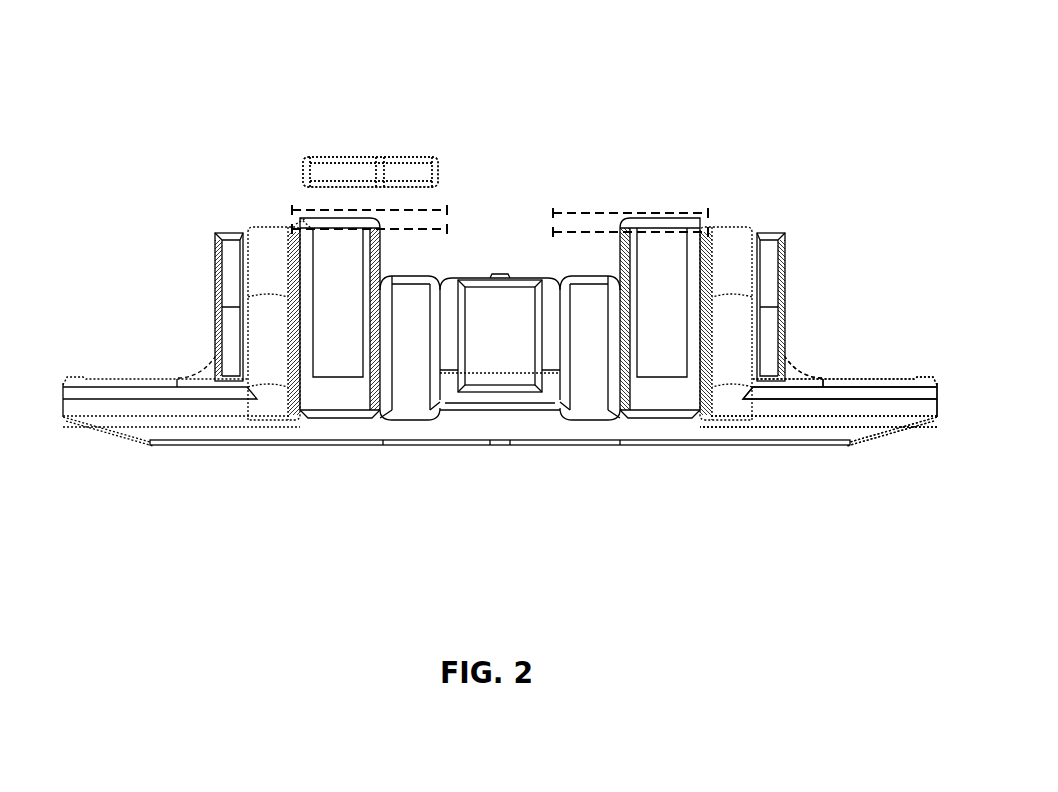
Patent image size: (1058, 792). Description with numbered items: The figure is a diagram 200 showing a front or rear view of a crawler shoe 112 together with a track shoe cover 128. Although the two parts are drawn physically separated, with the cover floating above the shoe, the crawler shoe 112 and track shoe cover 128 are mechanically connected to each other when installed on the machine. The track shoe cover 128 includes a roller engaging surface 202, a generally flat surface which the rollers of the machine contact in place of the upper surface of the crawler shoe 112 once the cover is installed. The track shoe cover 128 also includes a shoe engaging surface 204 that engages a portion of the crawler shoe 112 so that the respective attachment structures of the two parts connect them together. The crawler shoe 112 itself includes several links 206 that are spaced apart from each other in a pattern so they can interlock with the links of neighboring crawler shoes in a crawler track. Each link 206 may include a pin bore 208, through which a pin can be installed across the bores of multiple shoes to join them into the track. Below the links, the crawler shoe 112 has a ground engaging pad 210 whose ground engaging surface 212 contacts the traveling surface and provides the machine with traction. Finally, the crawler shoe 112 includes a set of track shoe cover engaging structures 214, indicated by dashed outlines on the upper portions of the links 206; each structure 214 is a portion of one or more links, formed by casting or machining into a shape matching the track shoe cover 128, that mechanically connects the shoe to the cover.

The diagram 200 is at (120, 46).
The track shoe cover 128 is at (252, 126).
The roller engaging surface 202 is at (334, 151).
The shoe engaging surface 204 is at (316, 196).
The crawler shoe 112 is at (160, 276).
The track shoe cover engaging structure 214 is at (450, 214).
The link 206 is at (287, 356).
The pin bore 208 is at (296, 306).
The ground engaging pad 210 is at (882, 372).
The ground engaging surface 212 is at (406, 458).